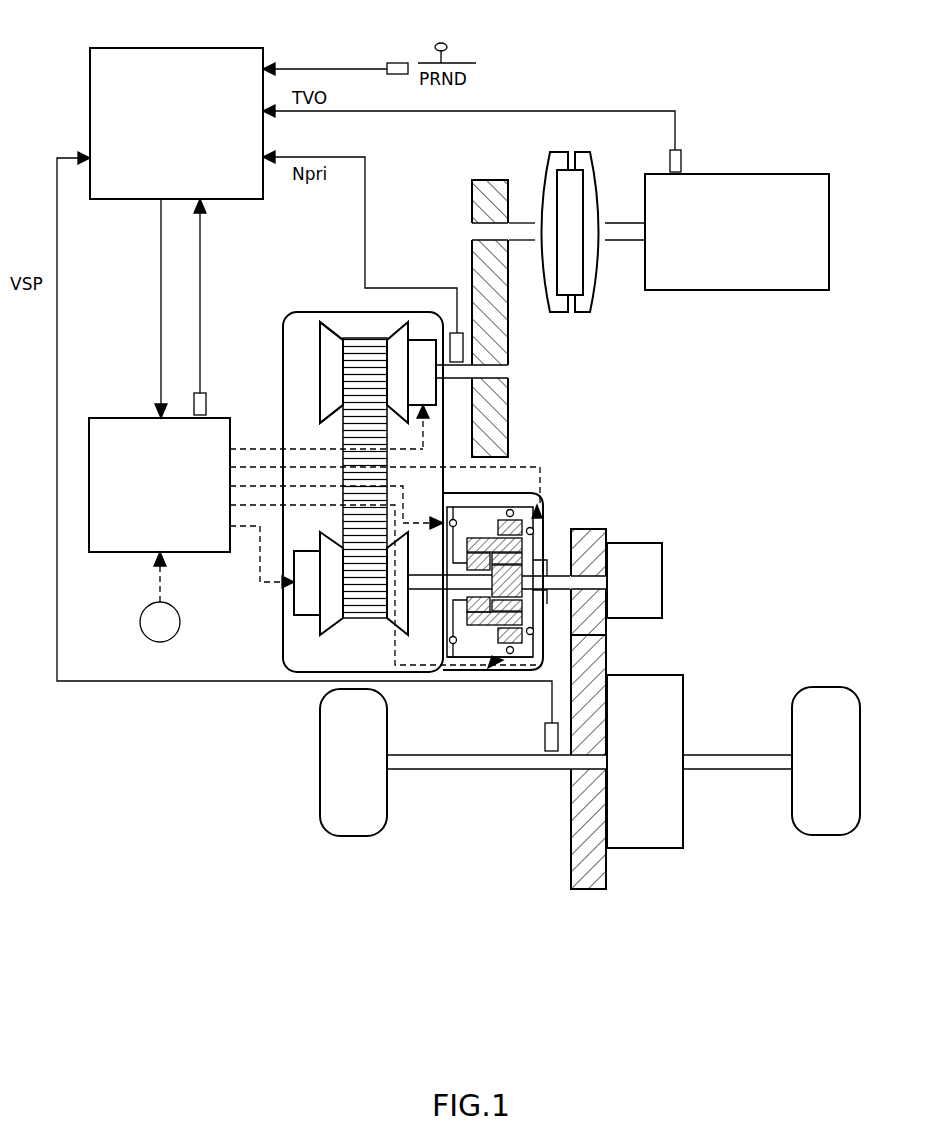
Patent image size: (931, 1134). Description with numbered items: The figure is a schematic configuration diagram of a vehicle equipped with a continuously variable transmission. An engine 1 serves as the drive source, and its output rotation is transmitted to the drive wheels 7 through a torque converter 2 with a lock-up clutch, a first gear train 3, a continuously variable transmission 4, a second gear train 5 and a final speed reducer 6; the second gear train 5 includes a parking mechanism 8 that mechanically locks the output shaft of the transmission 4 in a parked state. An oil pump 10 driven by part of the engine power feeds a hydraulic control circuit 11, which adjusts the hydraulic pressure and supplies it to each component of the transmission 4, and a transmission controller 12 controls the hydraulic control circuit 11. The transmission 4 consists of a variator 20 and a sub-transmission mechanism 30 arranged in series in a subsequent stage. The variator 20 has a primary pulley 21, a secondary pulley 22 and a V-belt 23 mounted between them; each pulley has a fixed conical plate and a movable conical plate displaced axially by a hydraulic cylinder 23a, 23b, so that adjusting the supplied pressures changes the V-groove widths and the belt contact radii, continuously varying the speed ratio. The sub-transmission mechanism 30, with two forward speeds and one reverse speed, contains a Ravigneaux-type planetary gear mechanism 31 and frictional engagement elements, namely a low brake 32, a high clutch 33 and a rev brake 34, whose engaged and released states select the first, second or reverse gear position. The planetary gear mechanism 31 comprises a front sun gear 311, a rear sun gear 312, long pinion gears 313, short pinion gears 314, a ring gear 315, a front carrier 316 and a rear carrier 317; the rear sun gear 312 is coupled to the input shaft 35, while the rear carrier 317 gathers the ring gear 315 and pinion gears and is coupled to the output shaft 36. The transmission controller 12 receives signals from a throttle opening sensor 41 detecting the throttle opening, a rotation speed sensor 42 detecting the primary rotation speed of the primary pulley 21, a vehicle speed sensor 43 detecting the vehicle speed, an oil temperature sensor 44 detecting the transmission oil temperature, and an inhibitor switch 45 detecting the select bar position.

The engine 1 is at (802, 184).
The torque converter 2 is at (592, 178).
The first gear train 3 is at (494, 168).
The continuously variable transmission 4 is at (324, 312).
The second gear train 5 is at (588, 897).
The final speed reducer 6 is at (650, 848).
The drive wheels 7 is at (352, 836).
The parking mechanism 8 is at (654, 567).
The oil pump 10 is at (140, 622).
The hydraulic control circuit 11 is at (112, 424).
The transmission controller 12 is at (216, 48).
The variator 20 is at (305, 343).
The primary pulley 21 is at (330, 375).
The secondary pulley 22 is at (323, 628).
The V-belt 23 is at (364, 338).
The hydraulic cylinder 23a is at (422, 350).
The hydraulic cylinder 23b is at (296, 598).
The sub-transmission mechanism 30 is at (582, 472).
The Ravigneaux-type planetary gear mechanism 31 is at (445, 660).
The low brake 32 is at (456, 522).
The high clutch 33 is at (535, 528).
The rev brake 34 is at (505, 655).
The input shaft 35 is at (430, 590).
The output shaft 36 is at (598, 566).
The throttle opening sensor 41 is at (681, 156).
The rotation speed sensor 42 is at (455, 333).
The vehicle speed sensor 43 is at (545, 737).
The oil temperature sensor 44 is at (206, 404).
The inhibitor switch 45 is at (398, 63).
The front sun gear 311 is at (458, 565).
The rear sun gear 312 is at (576, 542).
The long pinion gears 313 is at (467, 547).
The short pinion gears 314 is at (540, 625).
The ring gear 315 is at (512, 655).
The front carrier 316 is at (450, 632).
The rear carrier 317 is at (530, 550).